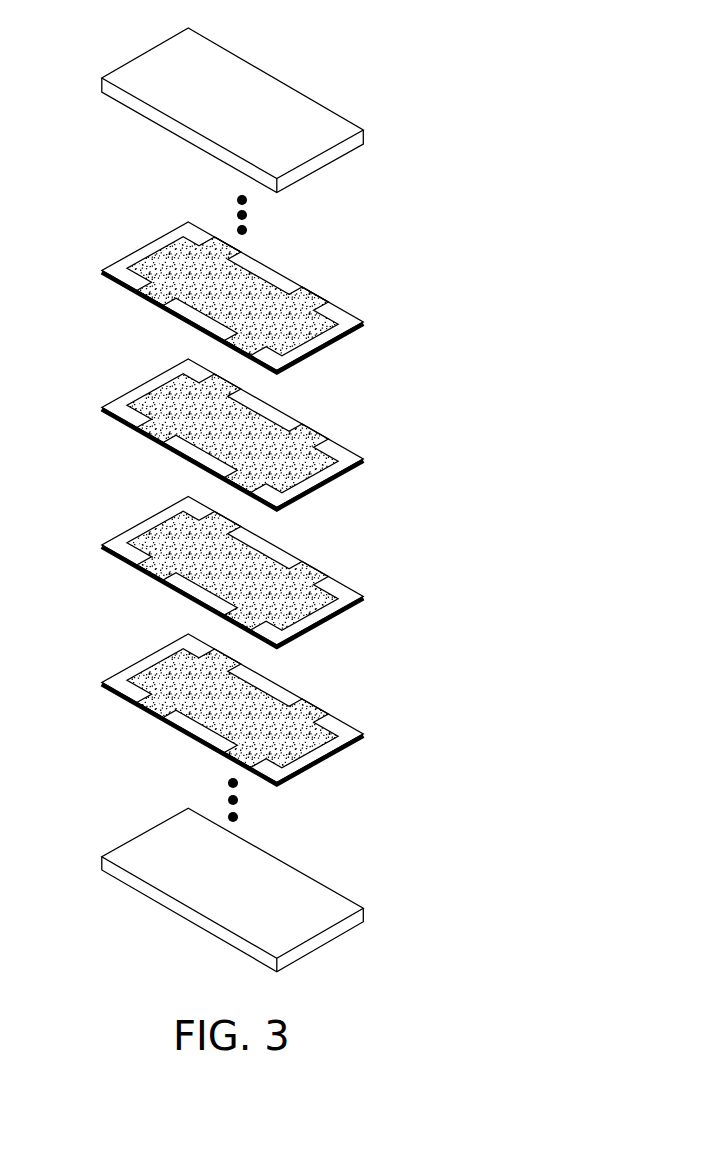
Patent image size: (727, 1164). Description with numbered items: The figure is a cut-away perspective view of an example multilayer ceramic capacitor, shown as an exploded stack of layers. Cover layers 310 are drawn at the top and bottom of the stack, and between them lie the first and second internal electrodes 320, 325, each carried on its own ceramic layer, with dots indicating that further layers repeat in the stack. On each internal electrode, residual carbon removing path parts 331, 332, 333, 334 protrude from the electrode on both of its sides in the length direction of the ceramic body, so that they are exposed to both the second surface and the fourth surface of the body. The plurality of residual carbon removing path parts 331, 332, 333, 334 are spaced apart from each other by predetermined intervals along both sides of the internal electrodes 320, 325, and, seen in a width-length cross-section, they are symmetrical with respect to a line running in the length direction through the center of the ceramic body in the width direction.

The cover sheet 310 is at (263, 87).
The first internal electrode 320 is at (157, 250).
The second internal electrode 325 is at (315, 470).
The residual carbon removing path part 331 is at (230, 250).
The residual carbon removing path part 332 is at (315, 300).
The residual carbon removing path part 333 is at (140, 292).
The residual carbon removing path part 334 is at (212, 337).